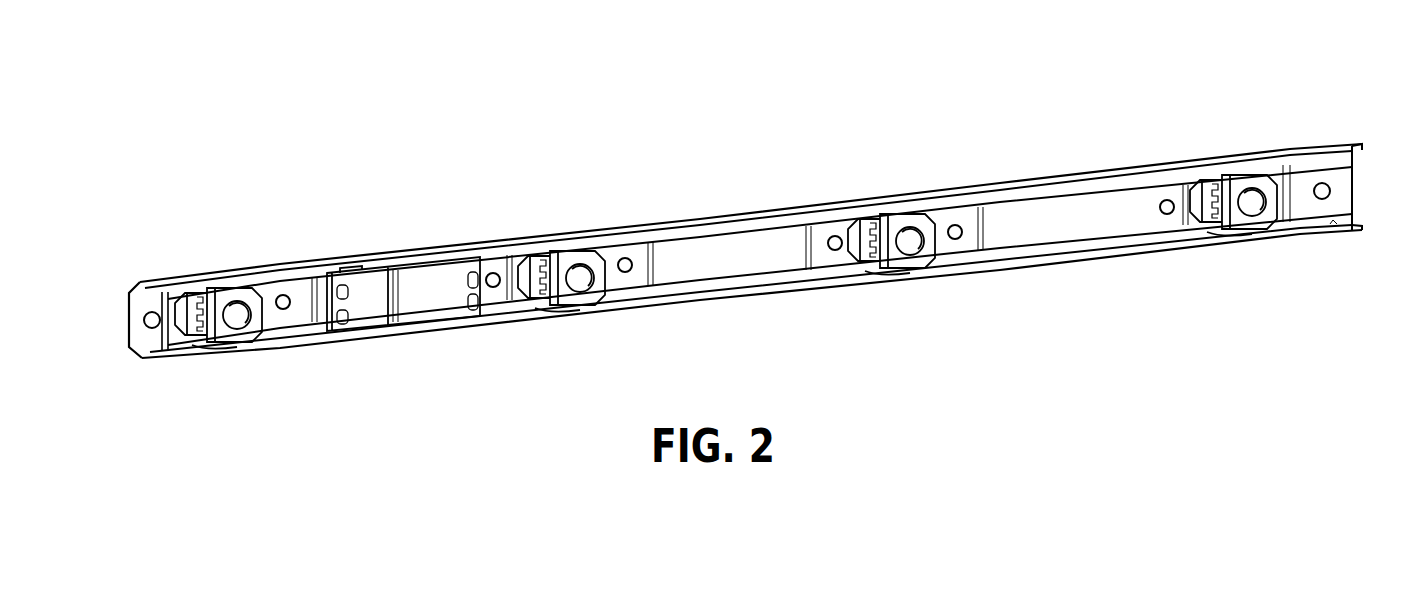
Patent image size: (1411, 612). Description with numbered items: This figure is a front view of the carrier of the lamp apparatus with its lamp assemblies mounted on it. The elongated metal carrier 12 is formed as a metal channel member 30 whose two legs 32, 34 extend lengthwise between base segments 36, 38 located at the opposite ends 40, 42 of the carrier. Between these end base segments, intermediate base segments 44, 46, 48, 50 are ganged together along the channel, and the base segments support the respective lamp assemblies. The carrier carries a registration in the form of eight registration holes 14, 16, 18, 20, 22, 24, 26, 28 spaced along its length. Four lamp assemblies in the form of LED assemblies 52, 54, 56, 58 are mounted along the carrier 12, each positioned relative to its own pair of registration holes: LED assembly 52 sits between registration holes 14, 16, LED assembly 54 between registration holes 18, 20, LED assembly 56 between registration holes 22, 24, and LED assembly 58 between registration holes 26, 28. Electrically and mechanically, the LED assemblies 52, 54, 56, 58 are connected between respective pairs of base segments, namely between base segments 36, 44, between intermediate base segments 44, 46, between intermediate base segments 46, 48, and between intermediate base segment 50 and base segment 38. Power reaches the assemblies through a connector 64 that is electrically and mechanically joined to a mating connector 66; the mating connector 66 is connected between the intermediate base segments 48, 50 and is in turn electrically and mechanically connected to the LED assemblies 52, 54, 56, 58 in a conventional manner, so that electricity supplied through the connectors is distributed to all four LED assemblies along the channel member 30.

The elongated metal carrier 12 is at (755, 145).
The registration hole 14 is at (1322, 182).
The registration hole 16 is at (1166, 200).
The registration hole 18 is at (955, 225).
The registration hole 20 is at (835, 236).
The registration hole 22 is at (624, 258).
The registration hole 24 is at (492, 273).
The registration hole 26 is at (284, 296).
The registration hole 28 is at (148, 326).
The metal channel member 30 is at (1358, 146).
The leg 32 is at (1258, 160).
The leg 34 is at (1333, 225).
The base segment 36 is at (1342, 185).
The base segment 38 is at (128, 307).
The end of carrier 40 is at (1378, 148).
The end of carrier 42 is at (117, 290).
The intermediate base segment 44 is at (1067, 228).
The intermediate base segment 46 is at (690, 265).
The intermediate base segment 48 is at (503, 293).
The intermediate base segment 50 is at (268, 316).
The LED assembly 52 is at (1253, 230).
The LED assembly 54 is at (924, 265).
The LED assembly 56 is at (586, 302).
The LED assembly 58 is at (236, 347).
The connector 64 is at (346, 268).
The mating connector 66 is at (412, 313).